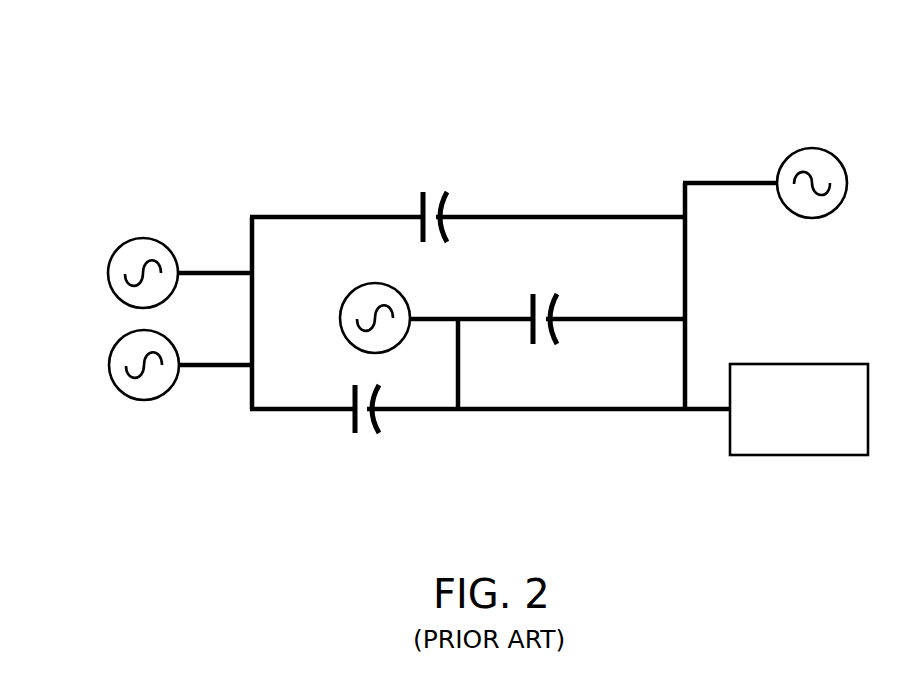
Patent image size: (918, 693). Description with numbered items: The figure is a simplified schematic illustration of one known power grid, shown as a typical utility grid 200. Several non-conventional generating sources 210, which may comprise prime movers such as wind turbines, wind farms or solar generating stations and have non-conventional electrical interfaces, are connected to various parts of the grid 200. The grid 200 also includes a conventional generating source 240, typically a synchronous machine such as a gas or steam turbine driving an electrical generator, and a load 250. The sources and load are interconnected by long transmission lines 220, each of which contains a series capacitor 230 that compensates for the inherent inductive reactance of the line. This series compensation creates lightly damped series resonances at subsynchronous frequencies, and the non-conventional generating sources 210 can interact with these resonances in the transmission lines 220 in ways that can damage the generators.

The utility grid 200 is at (276, 68).
The non-conventional generating source 210 is at (117, 297).
The transmission line 220 is at (295, 213).
The series capacitor 230 is at (446, 187).
The conventional generating source 240 is at (797, 148).
The load 250 is at (799, 409).